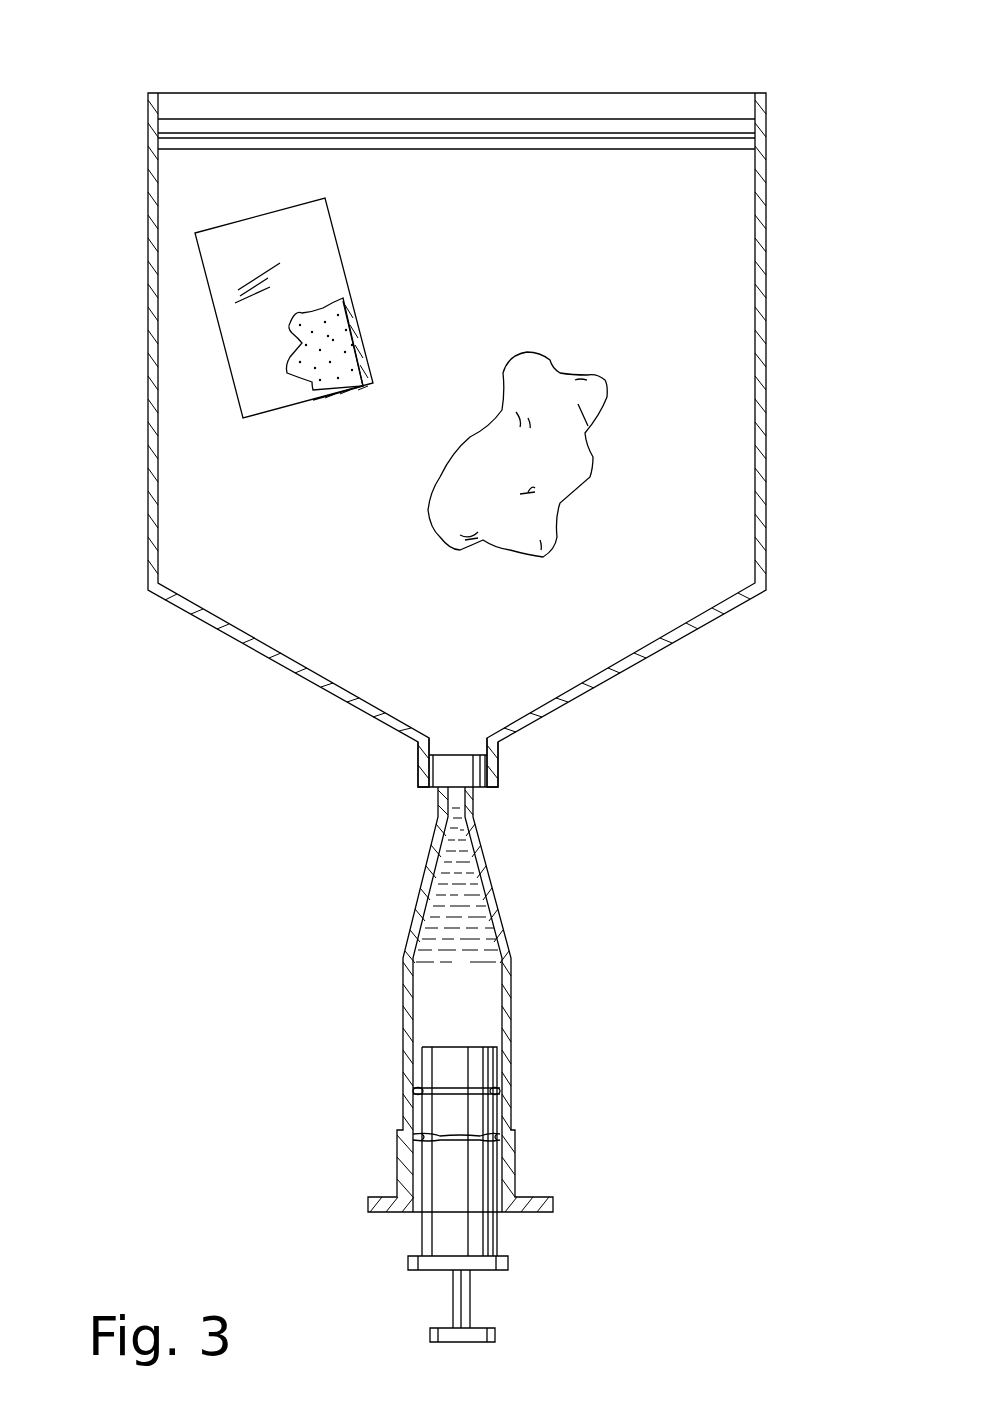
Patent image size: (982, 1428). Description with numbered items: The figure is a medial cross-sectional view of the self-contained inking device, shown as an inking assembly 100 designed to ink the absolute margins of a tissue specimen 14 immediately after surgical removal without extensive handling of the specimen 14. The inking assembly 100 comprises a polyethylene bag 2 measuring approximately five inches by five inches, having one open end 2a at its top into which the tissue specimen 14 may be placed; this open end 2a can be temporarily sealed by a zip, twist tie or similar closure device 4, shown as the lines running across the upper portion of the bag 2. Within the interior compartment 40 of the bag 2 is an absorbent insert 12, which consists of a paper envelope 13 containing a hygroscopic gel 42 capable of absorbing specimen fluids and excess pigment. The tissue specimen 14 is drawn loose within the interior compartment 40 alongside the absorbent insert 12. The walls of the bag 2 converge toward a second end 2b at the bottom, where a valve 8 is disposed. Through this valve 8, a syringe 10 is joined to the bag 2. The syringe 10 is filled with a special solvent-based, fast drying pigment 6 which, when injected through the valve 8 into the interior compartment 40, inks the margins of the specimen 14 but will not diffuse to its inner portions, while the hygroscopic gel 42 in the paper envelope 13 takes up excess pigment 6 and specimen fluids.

The inking assembly 100 is at (262, 60).
The polyethylene bag 2 is at (152, 263).
The open end 2a is at (532, 92).
The second end 2b is at (418, 748).
The closure device 4 is at (327, 137).
The pigment 6 is at (462, 922).
The valve 8 is at (455, 765).
The syringe 10 is at (505, 995).
The absorbent insert 12 is at (385, 280).
The paper envelope 13 is at (310, 228).
The tissue specimen 14 is at (560, 433).
The interior compartment 40 is at (690, 308).
The hygroscopic gel 42 is at (340, 352).